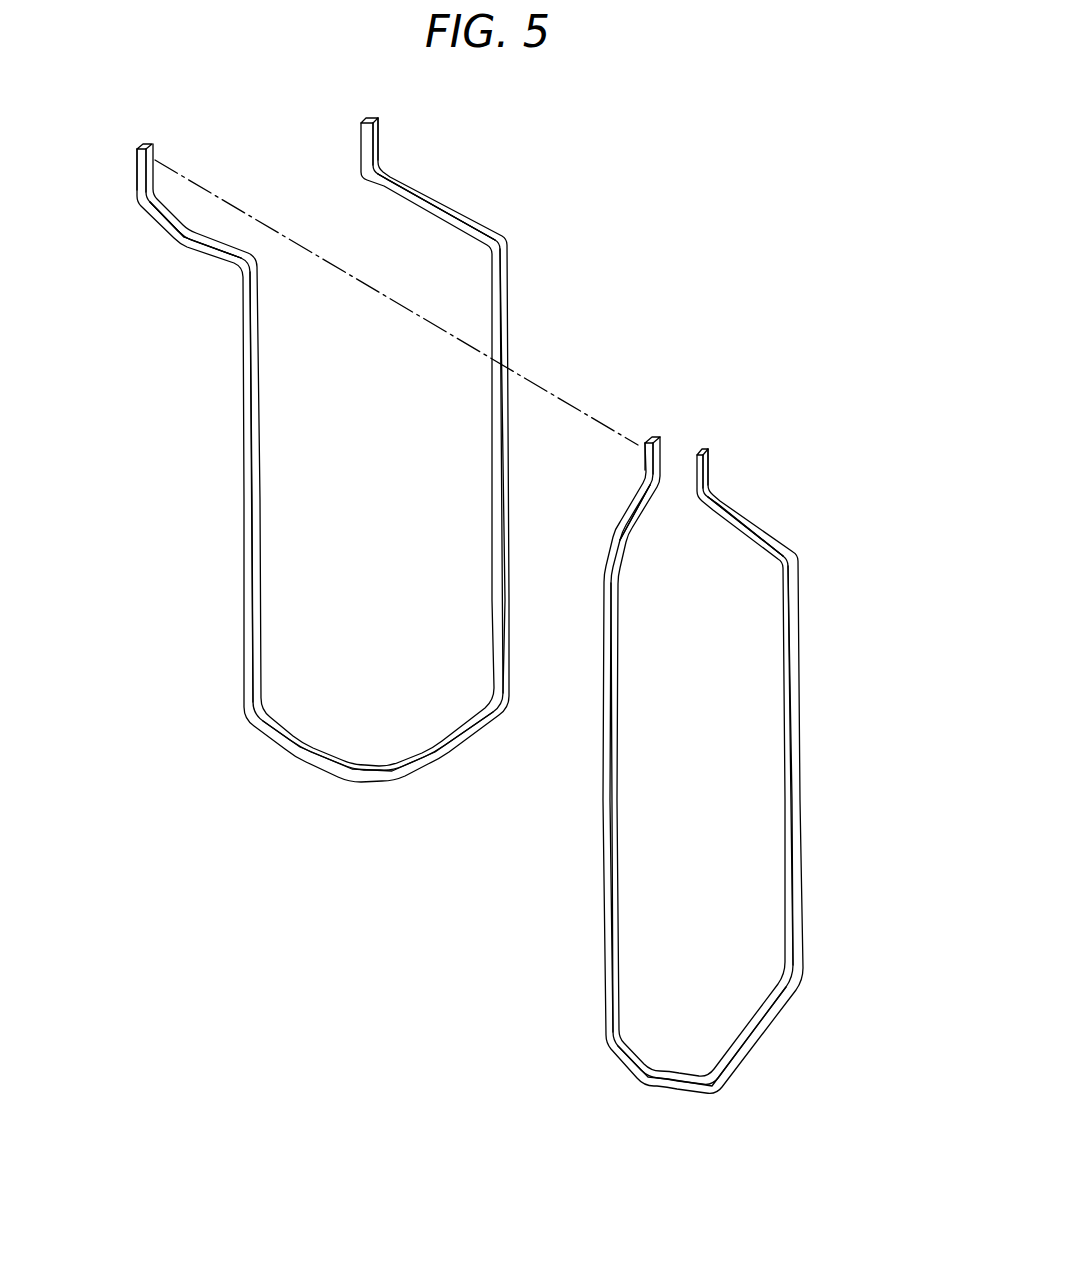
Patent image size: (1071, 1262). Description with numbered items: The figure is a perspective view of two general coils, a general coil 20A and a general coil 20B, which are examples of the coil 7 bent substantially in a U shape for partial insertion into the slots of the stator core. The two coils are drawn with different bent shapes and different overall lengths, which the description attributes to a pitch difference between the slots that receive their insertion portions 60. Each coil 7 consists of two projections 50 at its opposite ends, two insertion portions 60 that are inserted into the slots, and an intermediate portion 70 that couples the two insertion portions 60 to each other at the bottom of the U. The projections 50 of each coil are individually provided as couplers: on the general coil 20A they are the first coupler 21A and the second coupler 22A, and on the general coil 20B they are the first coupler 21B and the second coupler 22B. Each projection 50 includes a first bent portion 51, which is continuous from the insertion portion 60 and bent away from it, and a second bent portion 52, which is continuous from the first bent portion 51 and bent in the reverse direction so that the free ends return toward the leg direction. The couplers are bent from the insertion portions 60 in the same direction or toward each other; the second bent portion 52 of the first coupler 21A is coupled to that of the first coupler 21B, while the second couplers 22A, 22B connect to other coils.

The coil 7 is at (531, 605).
The general coil 20A is at (494, 302).
The general coil 20B is at (907, 708).
The projection 50 is at (451, 327).
The first coupler 21A is at (165, 222).
The second coupler 22A is at (423, 207).
The first coupler 21B is at (648, 497).
The second coupler 22B is at (728, 513).
The first bent portion 51 is at (460, 227).
The second bent portion 52 is at (372, 135).
The insertion portion 60 is at (250, 510).
The intermediate portion 70 is at (373, 777).